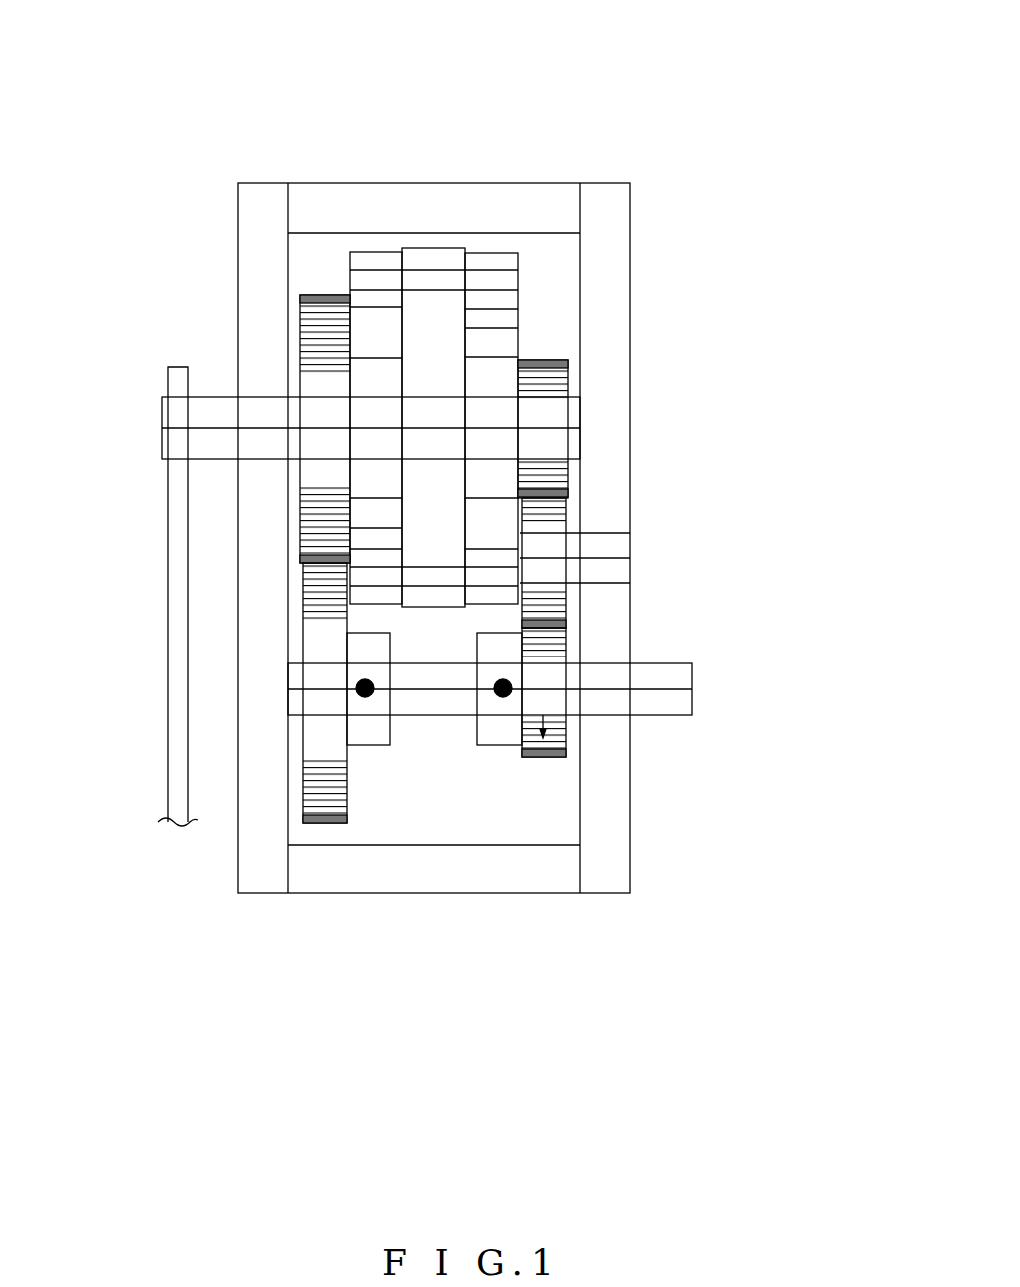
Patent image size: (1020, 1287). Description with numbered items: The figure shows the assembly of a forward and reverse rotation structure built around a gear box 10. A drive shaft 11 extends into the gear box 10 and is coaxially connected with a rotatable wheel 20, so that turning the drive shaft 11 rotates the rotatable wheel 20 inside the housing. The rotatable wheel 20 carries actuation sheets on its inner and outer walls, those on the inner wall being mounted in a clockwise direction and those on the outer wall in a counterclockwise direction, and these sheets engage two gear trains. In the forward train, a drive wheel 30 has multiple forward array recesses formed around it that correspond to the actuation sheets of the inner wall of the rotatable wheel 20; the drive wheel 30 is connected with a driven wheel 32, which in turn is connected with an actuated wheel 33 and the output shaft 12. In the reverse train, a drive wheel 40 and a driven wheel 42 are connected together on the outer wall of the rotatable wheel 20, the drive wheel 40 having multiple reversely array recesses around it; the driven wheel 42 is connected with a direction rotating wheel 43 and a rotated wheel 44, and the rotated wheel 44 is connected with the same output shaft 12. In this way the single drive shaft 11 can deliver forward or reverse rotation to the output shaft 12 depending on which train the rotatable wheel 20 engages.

The gear box 10 is at (512, 98).
The drive shaft 11 is at (212, 415).
The output shaft 12 is at (437, 700).
The rotatable wheel 20 is at (440, 275).
The drive wheel 30 is at (378, 330).
The driven wheel 32 is at (333, 335).
The actuated wheel 33 is at (330, 795).
The drive wheel 40 is at (500, 316).
The driven wheel 42 is at (547, 377).
The direction rotating wheel 43 is at (550, 607).
The rotated wheel 44 is at (558, 737).